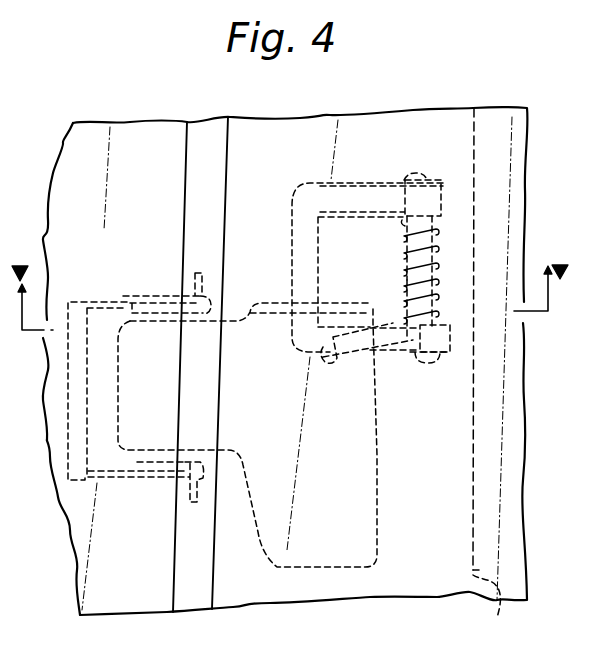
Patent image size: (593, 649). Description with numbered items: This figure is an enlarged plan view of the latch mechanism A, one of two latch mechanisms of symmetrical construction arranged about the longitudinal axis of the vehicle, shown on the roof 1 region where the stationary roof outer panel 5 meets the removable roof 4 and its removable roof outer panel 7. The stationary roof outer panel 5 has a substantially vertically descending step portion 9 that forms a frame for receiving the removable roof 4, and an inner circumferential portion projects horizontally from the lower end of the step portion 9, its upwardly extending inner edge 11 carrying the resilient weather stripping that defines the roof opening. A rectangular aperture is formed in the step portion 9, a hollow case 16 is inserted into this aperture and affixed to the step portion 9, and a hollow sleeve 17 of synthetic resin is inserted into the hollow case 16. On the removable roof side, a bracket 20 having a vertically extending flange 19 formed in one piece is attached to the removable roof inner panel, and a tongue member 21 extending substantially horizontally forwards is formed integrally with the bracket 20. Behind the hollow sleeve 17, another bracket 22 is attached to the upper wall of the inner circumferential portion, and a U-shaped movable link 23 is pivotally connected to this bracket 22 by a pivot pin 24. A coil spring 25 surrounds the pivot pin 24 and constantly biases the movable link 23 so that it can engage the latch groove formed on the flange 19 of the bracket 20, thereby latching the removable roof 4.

The printed circuit board 1 is at (121, 160).
The removable roof 4 is at (365, 137).
The stationary roof outer panel 5 is at (150, 143).
The removable roof outer panel 7 is at (443, 122).
The step portion 9 is at (188, 157).
The inner edge 11 is at (492, 608).
The hollow case 16 is at (85, 483).
The hollow sleeve 17 is at (131, 481).
The flange 19 is at (265, 301).
The bracket 20 is at (363, 455).
The tongue member 21 is at (125, 326).
The bracket 22 is at (378, 180).
The movable link 23 is at (303, 200).
The pivot pin 24 is at (440, 277).
The coil spring 25 is at (440, 247).
The latch mechanism A is at (407, 414).